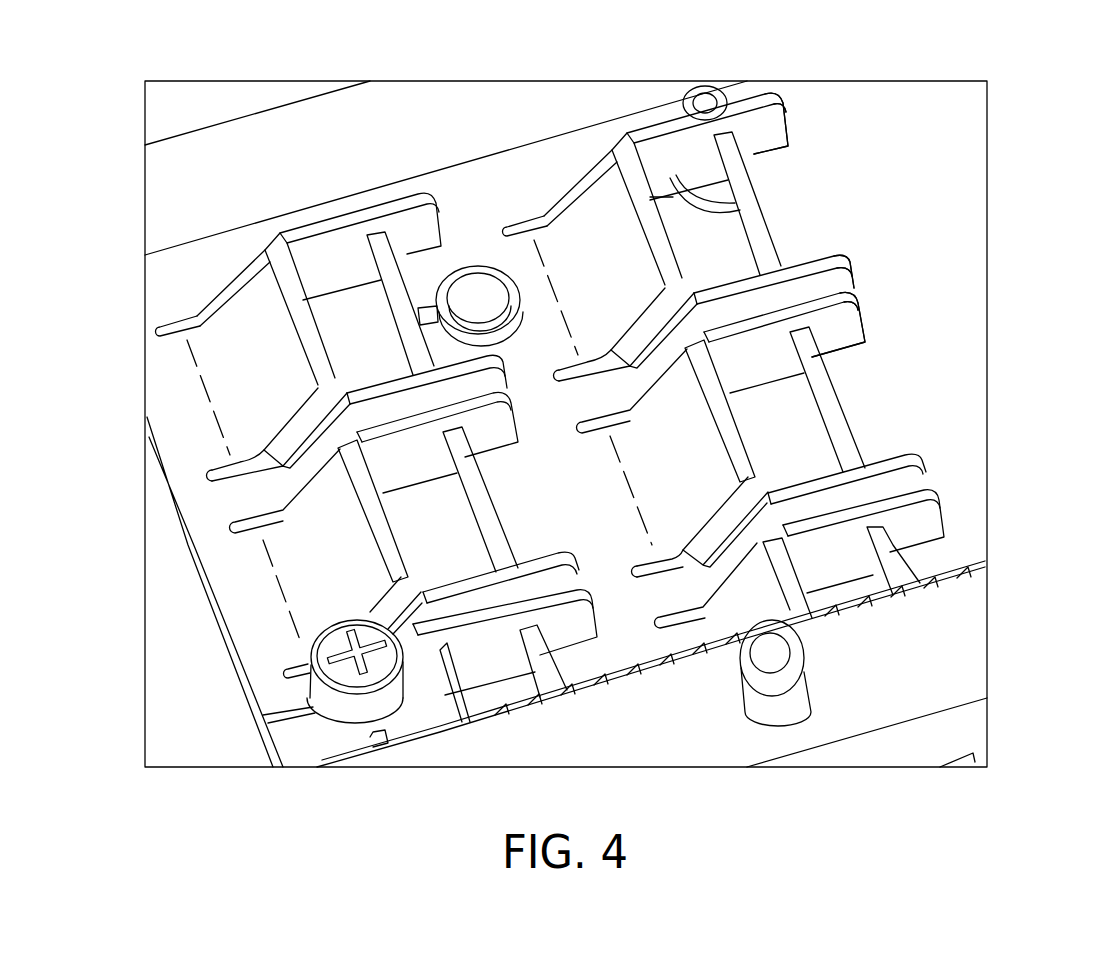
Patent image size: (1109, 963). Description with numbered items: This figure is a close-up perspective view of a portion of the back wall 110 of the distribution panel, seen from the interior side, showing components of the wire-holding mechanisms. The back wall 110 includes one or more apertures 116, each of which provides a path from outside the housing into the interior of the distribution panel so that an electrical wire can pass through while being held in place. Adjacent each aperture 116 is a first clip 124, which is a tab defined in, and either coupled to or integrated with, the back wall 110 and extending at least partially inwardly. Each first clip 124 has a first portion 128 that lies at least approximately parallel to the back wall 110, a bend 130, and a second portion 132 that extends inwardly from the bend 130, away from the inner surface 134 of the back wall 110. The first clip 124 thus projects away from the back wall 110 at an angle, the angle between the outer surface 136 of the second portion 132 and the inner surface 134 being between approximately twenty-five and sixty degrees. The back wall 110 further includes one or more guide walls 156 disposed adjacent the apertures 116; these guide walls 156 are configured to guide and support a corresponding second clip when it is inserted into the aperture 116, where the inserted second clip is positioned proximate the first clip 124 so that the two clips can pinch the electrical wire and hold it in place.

The back wall 110 is at (188, 522).
The aperture 116 is at (707, 243).
The first clip 124 is at (584, 210).
The first portion 128 is at (172, 402).
The bend 130 is at (198, 362).
The second portion 132 is at (215, 298).
The inner surface 134 is at (268, 655).
The outer surface 136 is at (310, 320).
The guide wall 156 is at (770, 115).